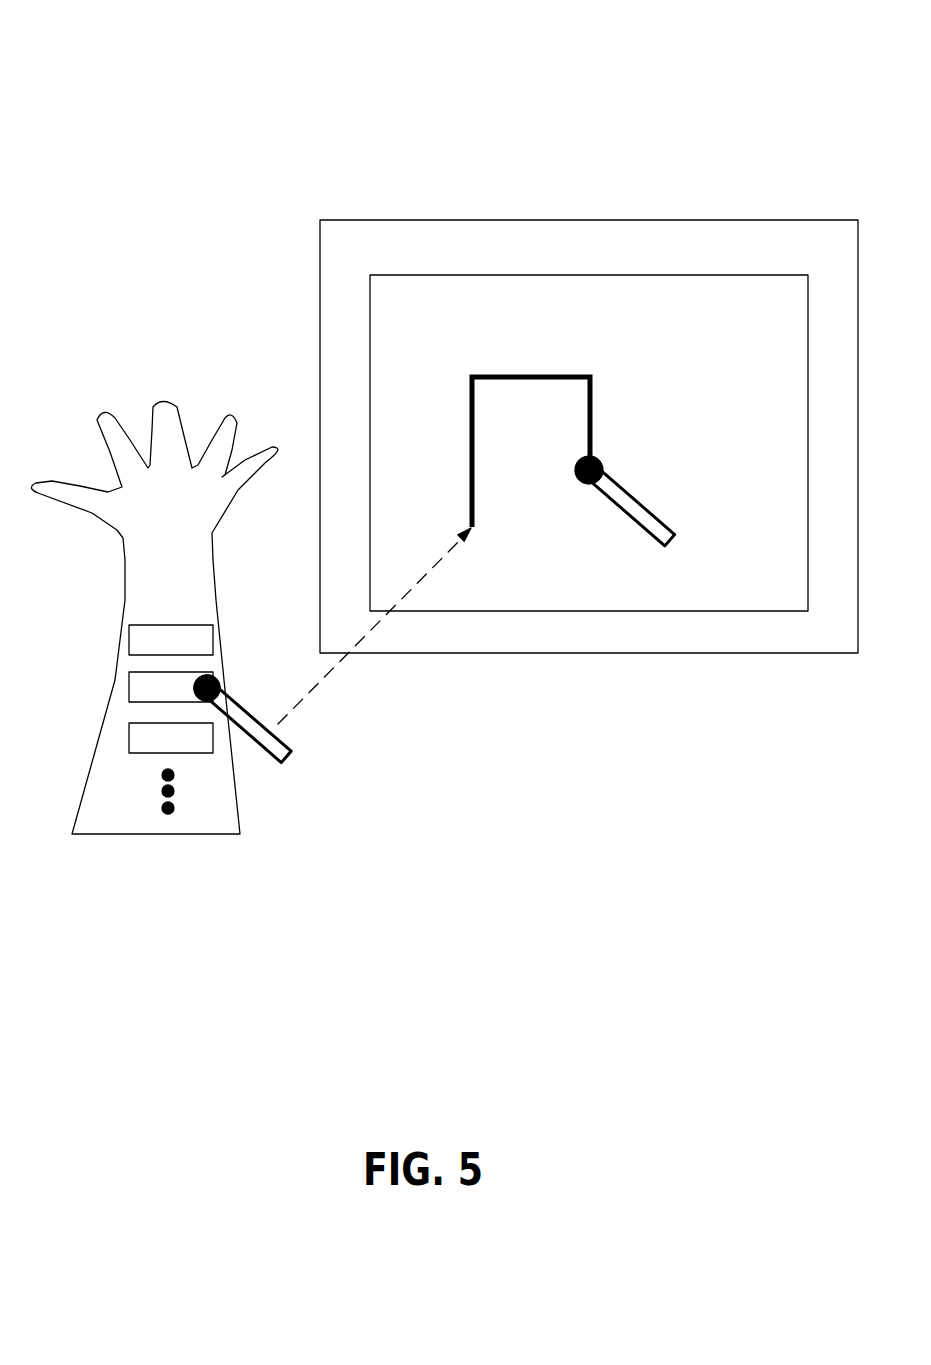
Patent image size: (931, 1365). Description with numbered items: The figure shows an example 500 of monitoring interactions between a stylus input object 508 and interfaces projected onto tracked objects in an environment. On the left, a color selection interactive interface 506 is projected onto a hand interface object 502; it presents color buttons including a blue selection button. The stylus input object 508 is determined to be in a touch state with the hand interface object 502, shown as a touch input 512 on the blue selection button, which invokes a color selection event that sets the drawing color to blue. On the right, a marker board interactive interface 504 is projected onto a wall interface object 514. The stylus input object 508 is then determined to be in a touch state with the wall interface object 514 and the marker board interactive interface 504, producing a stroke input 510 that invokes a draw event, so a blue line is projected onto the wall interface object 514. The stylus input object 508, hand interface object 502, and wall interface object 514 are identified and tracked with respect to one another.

The example 500 is at (176, 46).
The hand interface object 502 is at (123, 602).
The marker board interactive interface 504 is at (640, 275).
The color selection interactive interface 506 is at (187, 597).
The stylus input object 508 is at (652, 508).
The stroke input 510 is at (593, 392).
The touch input 512 is at (220, 677).
The wall interface object 514 is at (557, 220).